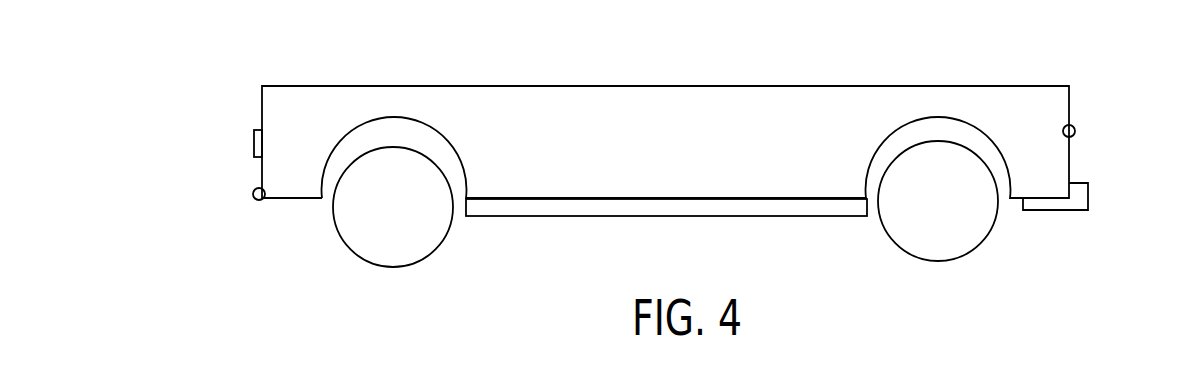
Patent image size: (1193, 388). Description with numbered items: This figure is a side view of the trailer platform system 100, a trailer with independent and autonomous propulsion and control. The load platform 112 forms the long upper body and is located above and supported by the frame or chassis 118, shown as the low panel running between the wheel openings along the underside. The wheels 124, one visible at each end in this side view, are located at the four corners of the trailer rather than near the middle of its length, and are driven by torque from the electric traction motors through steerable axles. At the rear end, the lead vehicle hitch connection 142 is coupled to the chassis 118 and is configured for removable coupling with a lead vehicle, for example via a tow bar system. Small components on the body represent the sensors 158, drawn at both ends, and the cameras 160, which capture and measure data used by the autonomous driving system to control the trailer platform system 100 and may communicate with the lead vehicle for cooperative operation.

The trailer platform system 100 is at (1100, 72).
The load platform 112 is at (780, 86).
The chassis 118 is at (748, 203).
The wheels 124 is at (383, 267).
The lead vehicle hitch connection 142 is at (1078, 199).
The sensors 158 is at (252, 198).
The cameras 160 is at (253, 145).